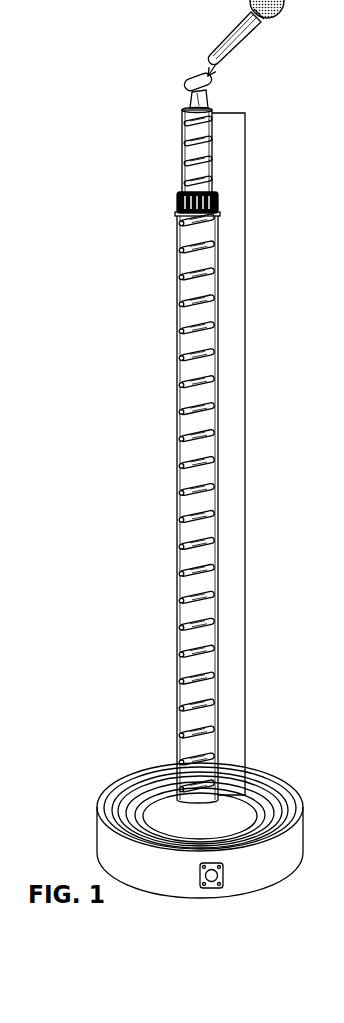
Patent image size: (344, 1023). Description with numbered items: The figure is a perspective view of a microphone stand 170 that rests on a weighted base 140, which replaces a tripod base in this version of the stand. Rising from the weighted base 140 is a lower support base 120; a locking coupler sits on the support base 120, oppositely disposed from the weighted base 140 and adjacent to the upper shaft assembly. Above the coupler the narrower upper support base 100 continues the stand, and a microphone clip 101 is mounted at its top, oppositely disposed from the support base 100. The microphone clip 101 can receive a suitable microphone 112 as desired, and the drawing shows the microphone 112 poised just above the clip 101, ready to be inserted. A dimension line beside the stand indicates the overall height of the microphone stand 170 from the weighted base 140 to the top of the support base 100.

The support base 100 is at (180, 134).
The microphone clip 101 is at (182, 88).
The microphone 112 is at (225, 28).
The support base 120 is at (177, 255).
The weighted base 140 is at (100, 803).
The microphone stand 170 is at (245, 443).